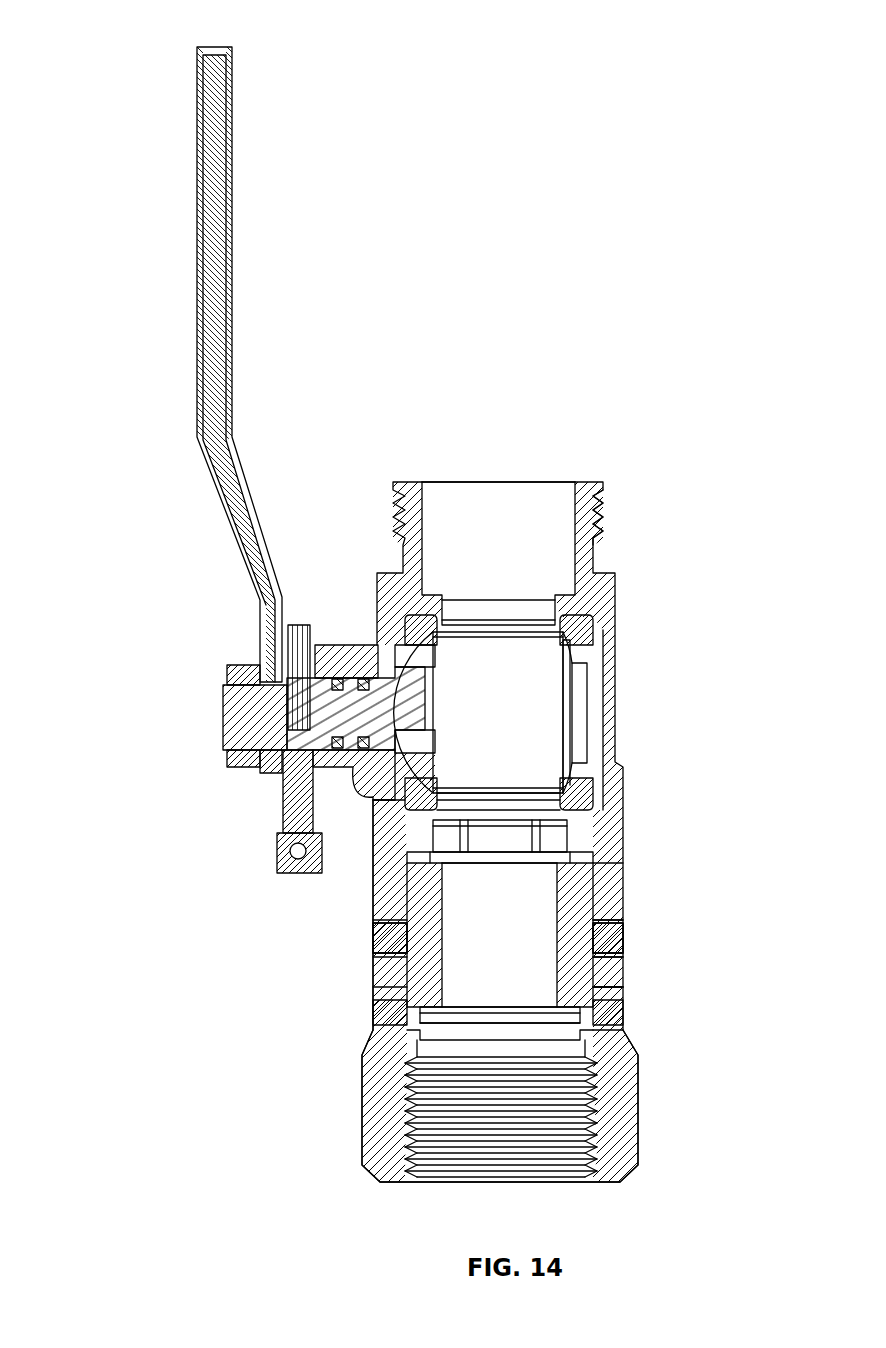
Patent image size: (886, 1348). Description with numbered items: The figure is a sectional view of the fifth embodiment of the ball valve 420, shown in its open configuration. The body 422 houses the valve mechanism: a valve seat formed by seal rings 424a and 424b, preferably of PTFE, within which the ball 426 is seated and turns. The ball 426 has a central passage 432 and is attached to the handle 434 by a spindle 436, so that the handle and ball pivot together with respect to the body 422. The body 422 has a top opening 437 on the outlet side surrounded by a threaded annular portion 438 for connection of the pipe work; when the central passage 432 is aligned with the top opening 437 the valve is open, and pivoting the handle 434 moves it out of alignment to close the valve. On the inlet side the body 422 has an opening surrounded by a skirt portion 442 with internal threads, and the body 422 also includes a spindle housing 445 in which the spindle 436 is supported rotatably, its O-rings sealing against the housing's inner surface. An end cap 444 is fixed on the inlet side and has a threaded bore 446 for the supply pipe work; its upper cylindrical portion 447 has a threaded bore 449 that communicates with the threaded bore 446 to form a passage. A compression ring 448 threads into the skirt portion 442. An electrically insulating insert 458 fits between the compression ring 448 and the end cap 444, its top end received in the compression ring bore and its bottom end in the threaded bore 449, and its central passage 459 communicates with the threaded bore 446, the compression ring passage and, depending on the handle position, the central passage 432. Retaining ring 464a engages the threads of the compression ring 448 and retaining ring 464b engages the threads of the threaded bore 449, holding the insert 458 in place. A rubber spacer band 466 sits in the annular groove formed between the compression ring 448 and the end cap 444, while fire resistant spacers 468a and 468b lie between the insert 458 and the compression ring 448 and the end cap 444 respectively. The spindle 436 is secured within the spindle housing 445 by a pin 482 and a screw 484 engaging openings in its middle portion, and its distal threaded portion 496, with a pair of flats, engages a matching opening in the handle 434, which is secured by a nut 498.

The ball valve 420 is at (148, 32).
The body 422 is at (660, 718).
The seal ring 424a is at (598, 636).
The seal ring 424b is at (605, 797).
The ball 426 is at (398, 645).
The central passage 432 is at (540, 703).
The handle 434 is at (228, 510).
The spindle 436 is at (357, 810).
The top opening 437 is at (546, 482).
The threaded annular portion 438 is at (605, 520).
The skirt portion 442 is at (383, 825).
The end cap 444 is at (662, 1130).
The spindle housing 445 is at (335, 648).
The threaded bore 446 is at (548, 1182).
The cylindrical portion 447 is at (623, 982).
The compression ring 448 is at (607, 905).
The threaded bore 449 is at (600, 1030).
The electrical insulation insert 458 is at (600, 932).
The central passage 459 is at (468, 950).
The retaining ring 464a is at (608, 890).
The retaining ring 464b is at (600, 1010).
The spacer band 466 is at (623, 940).
The fire resistant spacer 468a is at (510, 858).
The fire resistant spacer 468b is at (523, 1020).
The pin 482 is at (292, 628).
The screw 484 is at (270, 845).
The threaded portion 496 is at (225, 722).
The nut 498 is at (225, 762).